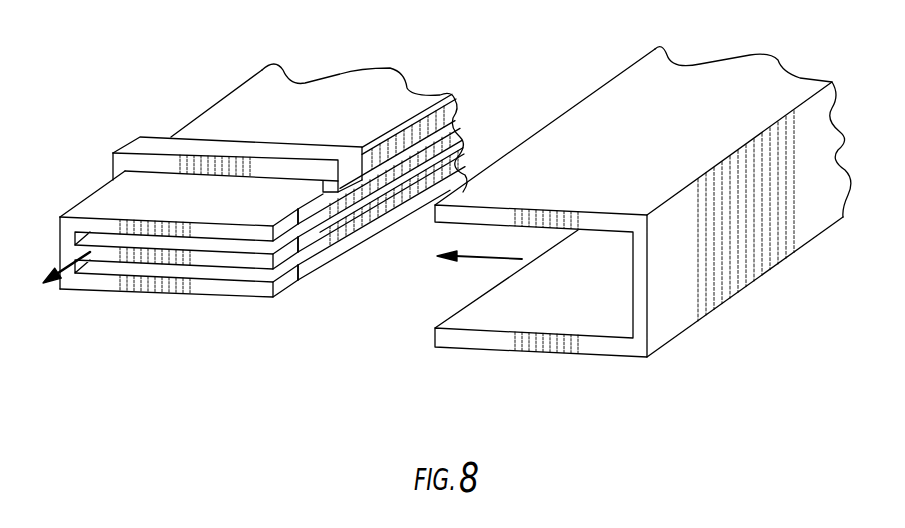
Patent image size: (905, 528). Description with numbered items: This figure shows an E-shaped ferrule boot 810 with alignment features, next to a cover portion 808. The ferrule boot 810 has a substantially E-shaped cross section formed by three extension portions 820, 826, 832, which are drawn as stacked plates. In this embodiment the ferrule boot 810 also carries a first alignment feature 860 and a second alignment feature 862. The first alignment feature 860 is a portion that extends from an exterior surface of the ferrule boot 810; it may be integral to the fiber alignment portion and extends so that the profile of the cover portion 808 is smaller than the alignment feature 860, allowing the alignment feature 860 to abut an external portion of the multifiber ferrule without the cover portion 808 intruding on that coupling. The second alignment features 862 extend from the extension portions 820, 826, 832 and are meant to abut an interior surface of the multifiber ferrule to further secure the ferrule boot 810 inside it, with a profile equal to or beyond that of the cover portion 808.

The cover portion 808 is at (591, 70).
The ferrule boot 810 is at (255, 200).
The extension portion 820 is at (206, 300).
The extension portion 826 is at (158, 196).
The extension portion 832 is at (250, 250).
The first alignment feature 860 is at (284, 139).
The second alignment feature 862 is at (302, 222).